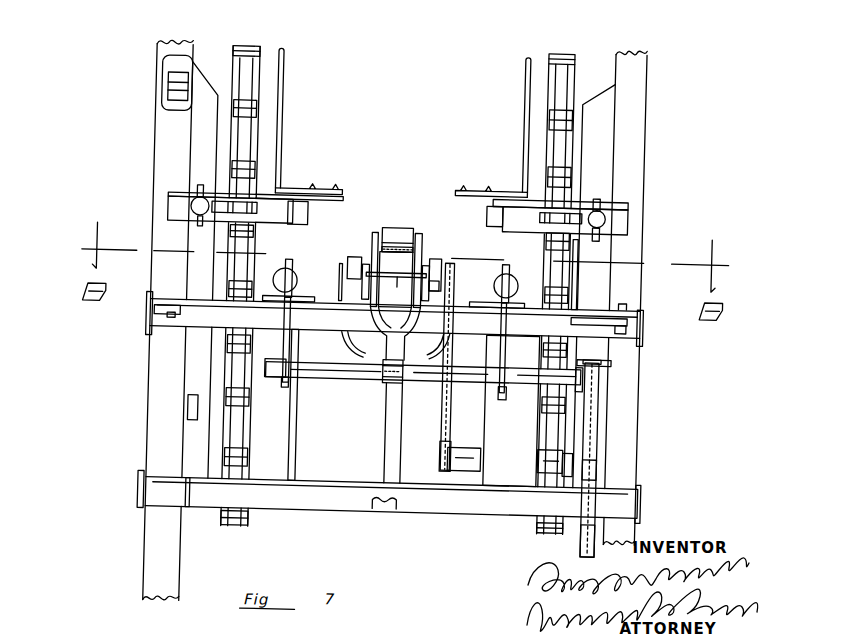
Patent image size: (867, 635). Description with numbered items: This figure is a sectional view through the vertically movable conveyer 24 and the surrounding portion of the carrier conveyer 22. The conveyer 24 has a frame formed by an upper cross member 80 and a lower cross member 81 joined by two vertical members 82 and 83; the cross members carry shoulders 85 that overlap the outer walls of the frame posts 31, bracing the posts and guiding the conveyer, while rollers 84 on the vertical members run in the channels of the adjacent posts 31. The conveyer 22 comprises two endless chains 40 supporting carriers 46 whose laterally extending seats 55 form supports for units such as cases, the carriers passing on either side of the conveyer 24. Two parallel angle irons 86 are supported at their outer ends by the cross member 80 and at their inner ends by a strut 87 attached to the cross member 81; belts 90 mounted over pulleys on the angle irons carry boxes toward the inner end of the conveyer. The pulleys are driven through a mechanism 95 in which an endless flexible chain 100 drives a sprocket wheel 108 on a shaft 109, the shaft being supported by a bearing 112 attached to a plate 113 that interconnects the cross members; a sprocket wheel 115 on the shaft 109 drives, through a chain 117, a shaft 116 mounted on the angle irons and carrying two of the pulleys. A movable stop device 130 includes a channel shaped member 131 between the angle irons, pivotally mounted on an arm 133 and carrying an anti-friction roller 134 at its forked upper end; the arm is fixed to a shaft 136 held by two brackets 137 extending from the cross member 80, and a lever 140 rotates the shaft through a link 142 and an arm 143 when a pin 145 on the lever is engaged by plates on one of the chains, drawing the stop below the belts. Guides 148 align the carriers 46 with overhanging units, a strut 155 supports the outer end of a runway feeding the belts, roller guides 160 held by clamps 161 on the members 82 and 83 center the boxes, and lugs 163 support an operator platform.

The conveyer 22 is at (566, 65).
The conveyer 24 is at (374, 543).
The posts 31 is at (162, 556).
The endless chains 40 is at (239, 57).
The carriers 46 is at (274, 96).
The seats 55 is at (320, 192).
The cross member 80 is at (148, 321).
The cross member 81 is at (162, 494).
The vertical member 82 is at (188, 147).
The vertical member 83 is at (593, 137).
The rollers 84 is at (175, 93).
The shoulders 85 is at (145, 336).
The angle irons 86 is at (354, 298).
The strut 87 is at (391, 448).
The belts 90 is at (441, 257).
The mechanism 95 is at (594, 462).
The endless flexible chain 100 is at (566, 548).
The sprocket wheel 108 is at (574, 457).
The shaft 109 is at (593, 433).
The bearing 112 is at (475, 465).
The plate 113 is at (512, 465).
The sprocket wheel 115 is at (447, 469).
The shaft 116 is at (395, 305).
The chain 117 is at (443, 399).
The movable stop device 130 is at (406, 232).
The channel shaped member 131 is at (383, 263).
The arm 133 is at (396, 377).
The anti-friction roller 134 is at (393, 240).
The shaft 136 is at (322, 379).
The brackets 137 is at (280, 385).
The lever 140 is at (570, 273).
The link 142 is at (638, 311).
The arm 143 is at (637, 357).
The pin 145 is at (608, 239).
The guides 148 is at (359, 354).
The strut 155 is at (386, 507).
The roller guides 160 is at (648, 210).
The clamps 161 is at (185, 212).
The lugs 163 is at (188, 412).